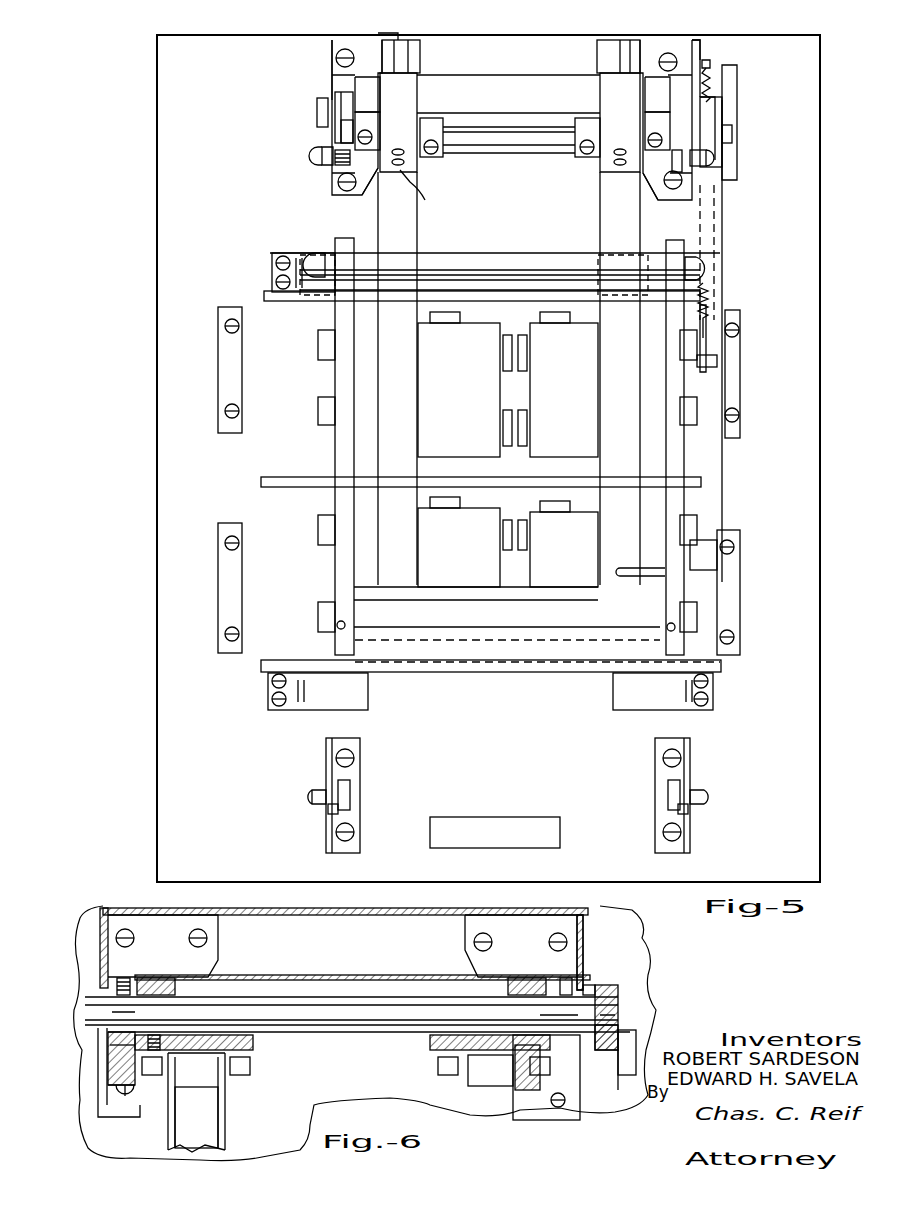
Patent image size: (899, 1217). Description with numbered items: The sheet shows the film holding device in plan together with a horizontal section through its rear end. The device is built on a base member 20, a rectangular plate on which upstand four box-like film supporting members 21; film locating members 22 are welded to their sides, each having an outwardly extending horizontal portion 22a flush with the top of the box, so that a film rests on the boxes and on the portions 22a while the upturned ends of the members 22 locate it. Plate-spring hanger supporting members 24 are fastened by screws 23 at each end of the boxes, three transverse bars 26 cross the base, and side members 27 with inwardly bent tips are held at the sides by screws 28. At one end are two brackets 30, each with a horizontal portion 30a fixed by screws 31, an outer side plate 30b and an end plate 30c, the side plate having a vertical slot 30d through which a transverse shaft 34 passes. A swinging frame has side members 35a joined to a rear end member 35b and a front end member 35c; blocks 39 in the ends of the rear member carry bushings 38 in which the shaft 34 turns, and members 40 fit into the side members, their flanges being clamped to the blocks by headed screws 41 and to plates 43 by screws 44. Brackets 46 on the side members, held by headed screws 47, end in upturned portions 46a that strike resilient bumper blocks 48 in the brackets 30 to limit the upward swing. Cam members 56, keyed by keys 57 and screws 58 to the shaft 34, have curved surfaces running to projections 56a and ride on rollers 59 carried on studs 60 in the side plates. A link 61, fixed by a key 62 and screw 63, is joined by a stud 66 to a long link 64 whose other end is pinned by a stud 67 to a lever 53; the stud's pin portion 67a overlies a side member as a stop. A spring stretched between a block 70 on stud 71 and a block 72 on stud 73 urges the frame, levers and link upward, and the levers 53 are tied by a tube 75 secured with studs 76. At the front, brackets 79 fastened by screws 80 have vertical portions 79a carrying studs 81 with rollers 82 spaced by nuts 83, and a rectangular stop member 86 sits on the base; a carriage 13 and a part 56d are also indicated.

In FIG. 5, the carriage 13 is at (432, 225).
In FIG. 5, the base member 20 is at (157, 132).
In FIG. 6, the base member 20 is at (278, 915).
In FIG. 5, the film supporting member 21 is at (335, 385).
In FIG. 5, the film locating member 22 is at (512, 334).
In FIG. 5, the horizontal portion 22a is at (325, 358).
In FIG. 5, the screw 23 is at (275, 282).
In FIG. 5, the hanger supporting member 24 is at (335, 255).
In FIG. 5, the transversely extending bar 26 is at (264, 295).
In FIG. 5, the side member 27 is at (218, 373).
In FIG. 5, the screw 28 is at (240, 326).
In FIG. 5, the bracket 30 is at (332, 75).
In FIG. 6, the bracket 30 is at (218, 940).
In FIG. 5, the horizontal portion 30a is at (368, 192).
In FIG. 6, the horizontal portion 30a is at (112, 912).
In FIG. 5, the side plate 30b is at (332, 55).
In FIG. 6, the side plate 30b is at (590, 932).
In FIG. 5, the end plate 30c is at (380, 38).
In FIG. 6, the end plate 30c is at (190, 908).
In FIG. 5, the slot 30d is at (335, 95).
In FIG. 6, the slot 30d is at (103, 1110).
In FIG. 5, the screw 31 is at (345, 49).
In FIG. 6, the screw 31 is at (208, 932).
In FIG. 5, the shaft 34 is at (317, 112).
In FIG. 6, the shaft 34 is at (362, 995).
In FIG. 5, the side member 35a is at (420, 385).
In FIG. 6, the side member 35a is at (225, 1138).
In FIG. 5, the rear end member 35b is at (528, 85).
In FIG. 5, the front end member 35c is at (458, 590).
In FIG. 6, the bushing 38 is at (185, 985).
In FIG. 6, the block 39 is at (145, 978).
In FIG. 5, the member 40 is at (432, 120).
In FIG. 6, the member 40 is at (196, 1092).
In FIG. 5, the headed screw 41 is at (372, 135).
In FIG. 6, the headed screw 41 is at (160, 1070).
In FIG. 6, the plate 43 is at (270, 1048).
In FIG. 5, the screw 44 is at (438, 160).
In FIG. 6, the screw 44 is at (245, 1076).
In FIG. 5, the bracket 46 is at (420, 62).
In FIG. 5, the terminal portion 46a is at (600, 80).
In FIG. 5, the headed screw 47 is at (612, 170).
In FIG. 5, the block of resilient material 48 is at (410, 50).
In FIG. 5, the lever 53 is at (668, 406).
In FIG. 6, the cam member 56 is at (135, 980).
In FIG. 5, the projection 56a is at (672, 135).
In FIG. 5, the plate 56d is at (340, 135).
In FIG. 6, the key 57 is at (135, 1012).
In FIG. 6, the screw 58 is at (124, 978).
In FIG. 5, the roller 59 is at (340, 172).
In FIG. 5, the headed stud 60 is at (310, 157).
In FIG. 5, the link 61 is at (722, 118).
In FIG. 6, the link 61 is at (618, 1000).
In FIG. 6, the key 62 is at (620, 1015).
In FIG. 6, the securing screw 63 is at (600, 990).
In FIG. 5, the long link 64 is at (724, 508).
In FIG. 6, the long link 64 is at (640, 1068).
In FIG. 5, the headed stud 66 is at (732, 132).
In FIG. 6, the headed stud 66 is at (636, 1040).
In FIG. 5, the headed stud 67 is at (722, 566).
In FIG. 5, the pin-like portion 67a is at (620, 570).
In FIG. 5, the block 70 is at (712, 55).
In FIG. 5, the headed stud 71 is at (690, 45).
In FIG. 5, the block 72 is at (700, 360).
In FIG. 5, the headed stud 73 is at (722, 362).
In FIG. 5, the transversely extending member 75 is at (496, 255).
In FIG. 5, the headed stud 76 is at (322, 252).
In FIG. 5, the bracket 79 is at (326, 756).
In FIG. 5, the vertical portion 79a is at (326, 836).
In FIG. 5, the screw 80 is at (354, 757).
In FIG. 5, the headed stud 81 is at (305, 796).
In FIG. 5, the roller 82 is at (350, 790).
In FIG. 5, the nut 83 is at (330, 812).
In FIG. 5, the stop member 86 is at (480, 818).